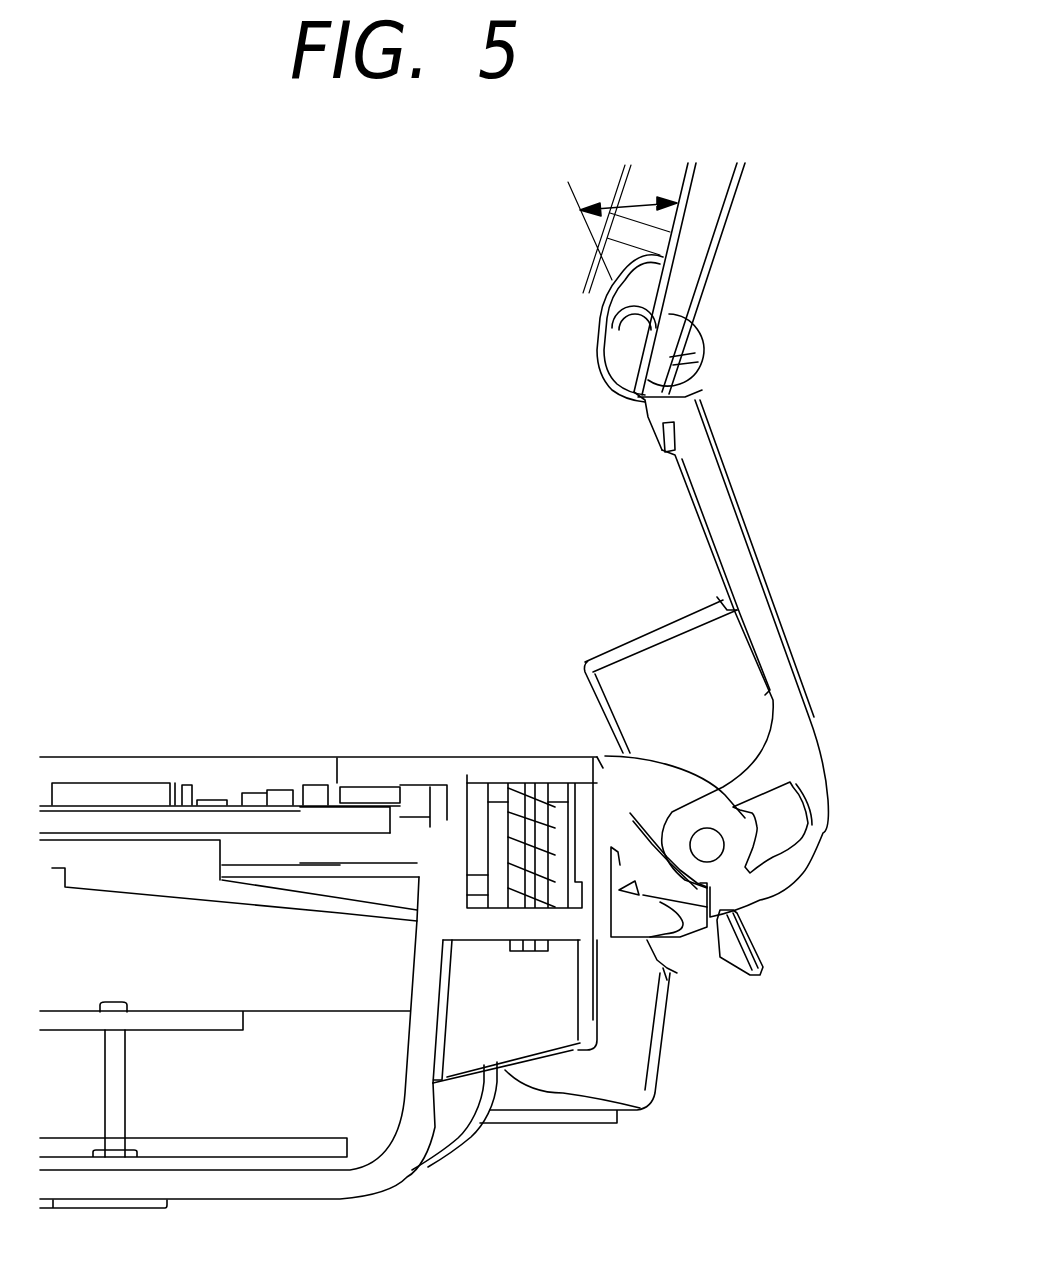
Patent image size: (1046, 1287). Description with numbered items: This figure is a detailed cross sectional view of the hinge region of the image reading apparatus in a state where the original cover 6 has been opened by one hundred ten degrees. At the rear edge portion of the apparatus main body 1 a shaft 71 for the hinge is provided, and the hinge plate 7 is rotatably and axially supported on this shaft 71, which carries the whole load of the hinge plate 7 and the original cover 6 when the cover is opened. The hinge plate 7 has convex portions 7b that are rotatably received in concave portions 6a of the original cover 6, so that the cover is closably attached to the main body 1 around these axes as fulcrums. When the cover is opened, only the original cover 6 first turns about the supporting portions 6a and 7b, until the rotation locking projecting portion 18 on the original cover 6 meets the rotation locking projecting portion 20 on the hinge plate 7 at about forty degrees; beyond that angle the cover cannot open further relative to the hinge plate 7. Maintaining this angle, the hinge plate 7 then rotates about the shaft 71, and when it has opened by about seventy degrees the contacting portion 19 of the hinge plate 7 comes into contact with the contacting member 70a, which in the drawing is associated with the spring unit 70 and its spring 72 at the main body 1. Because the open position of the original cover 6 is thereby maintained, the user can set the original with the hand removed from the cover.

The apparatus main body 1 is at (637, 1110).
The original cover 6 is at (725, 228).
The concave portion 6a is at (597, 348).
The convex portion 7b is at (632, 328).
The hinge plate 7 is at (767, 580).
The projecting portion 18 is at (700, 367).
The contacting portion 19 is at (723, 953).
The projecting portion 20 is at (657, 437).
The spring unit 70 is at (527, 755).
The contacting member 70a is at (700, 930).
The shaft for the hinge 71 is at (747, 863).
The spring 72 is at (510, 888).